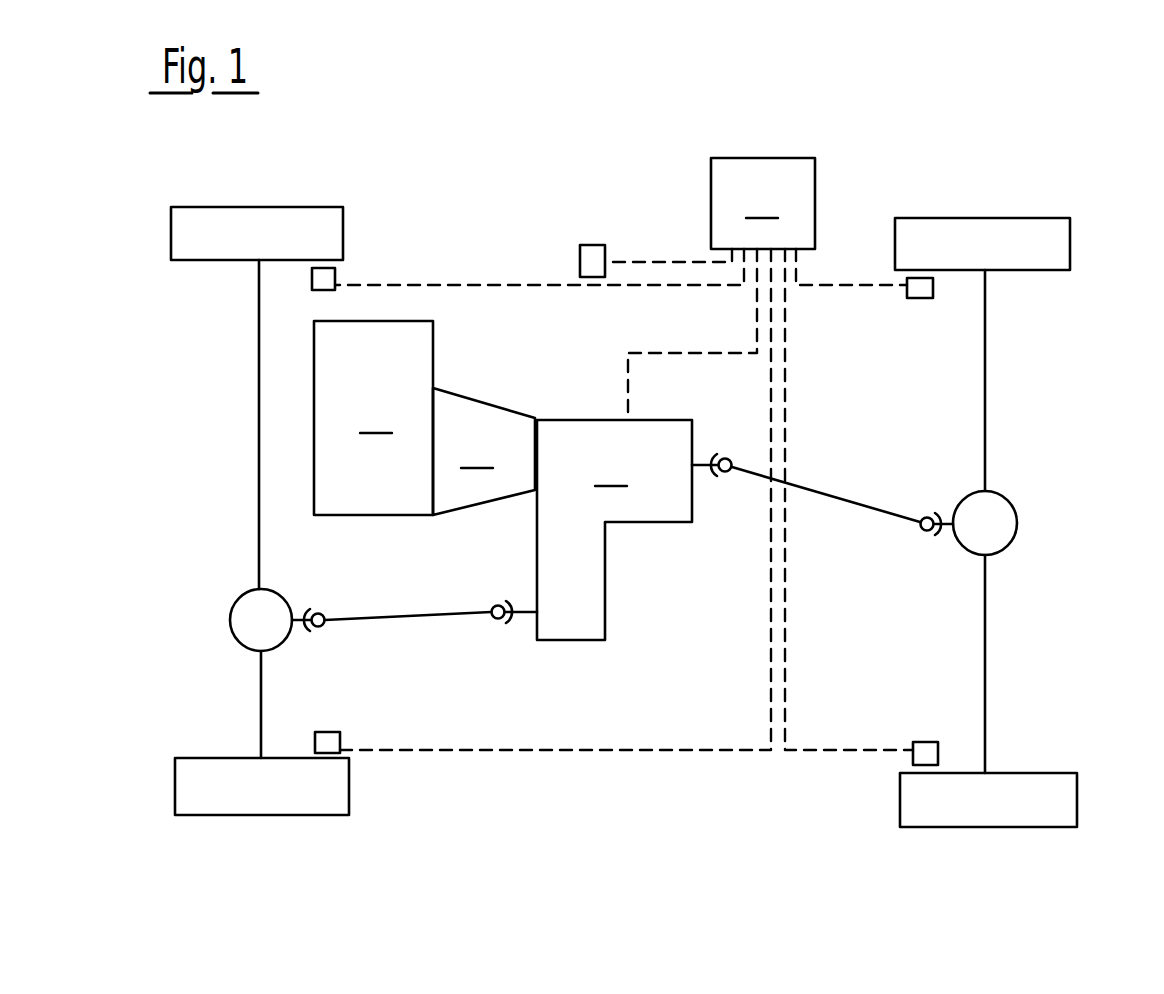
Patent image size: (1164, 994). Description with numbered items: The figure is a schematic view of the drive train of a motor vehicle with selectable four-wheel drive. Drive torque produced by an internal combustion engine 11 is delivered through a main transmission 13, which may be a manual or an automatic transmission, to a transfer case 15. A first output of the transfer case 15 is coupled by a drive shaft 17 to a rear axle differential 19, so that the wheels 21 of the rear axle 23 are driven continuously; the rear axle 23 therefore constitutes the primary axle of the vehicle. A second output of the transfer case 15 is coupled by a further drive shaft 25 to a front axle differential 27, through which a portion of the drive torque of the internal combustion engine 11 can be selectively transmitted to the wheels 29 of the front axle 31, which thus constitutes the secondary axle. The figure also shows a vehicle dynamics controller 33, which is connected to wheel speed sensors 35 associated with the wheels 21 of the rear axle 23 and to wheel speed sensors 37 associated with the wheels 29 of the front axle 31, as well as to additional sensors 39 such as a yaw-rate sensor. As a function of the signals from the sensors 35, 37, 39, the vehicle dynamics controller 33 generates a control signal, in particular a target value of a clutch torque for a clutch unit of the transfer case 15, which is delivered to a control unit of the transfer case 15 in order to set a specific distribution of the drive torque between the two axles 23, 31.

The internal combustion engine 11 is at (373, 418).
The main transmission 13 is at (484, 451).
The transfer case 15 is at (614, 530).
The drive shaft 17 is at (829, 490).
The rear axle differential 19 is at (1015, 515).
The wheels 21 is at (1040, 218).
The rear axle 23 is at (1040, 402).
The drive shaft 25 is at (408, 617).
The front axle differential 27 is at (230, 612).
The wheels 29 is at (195, 207).
The front axle 31 is at (228, 473).
The vehicle dynamics controller 33 is at (624, 454).
The wheel speed sensors 35 is at (918, 300).
The wheel speed sensors 37 is at (312, 281).
The additional sensors 39 is at (588, 245).